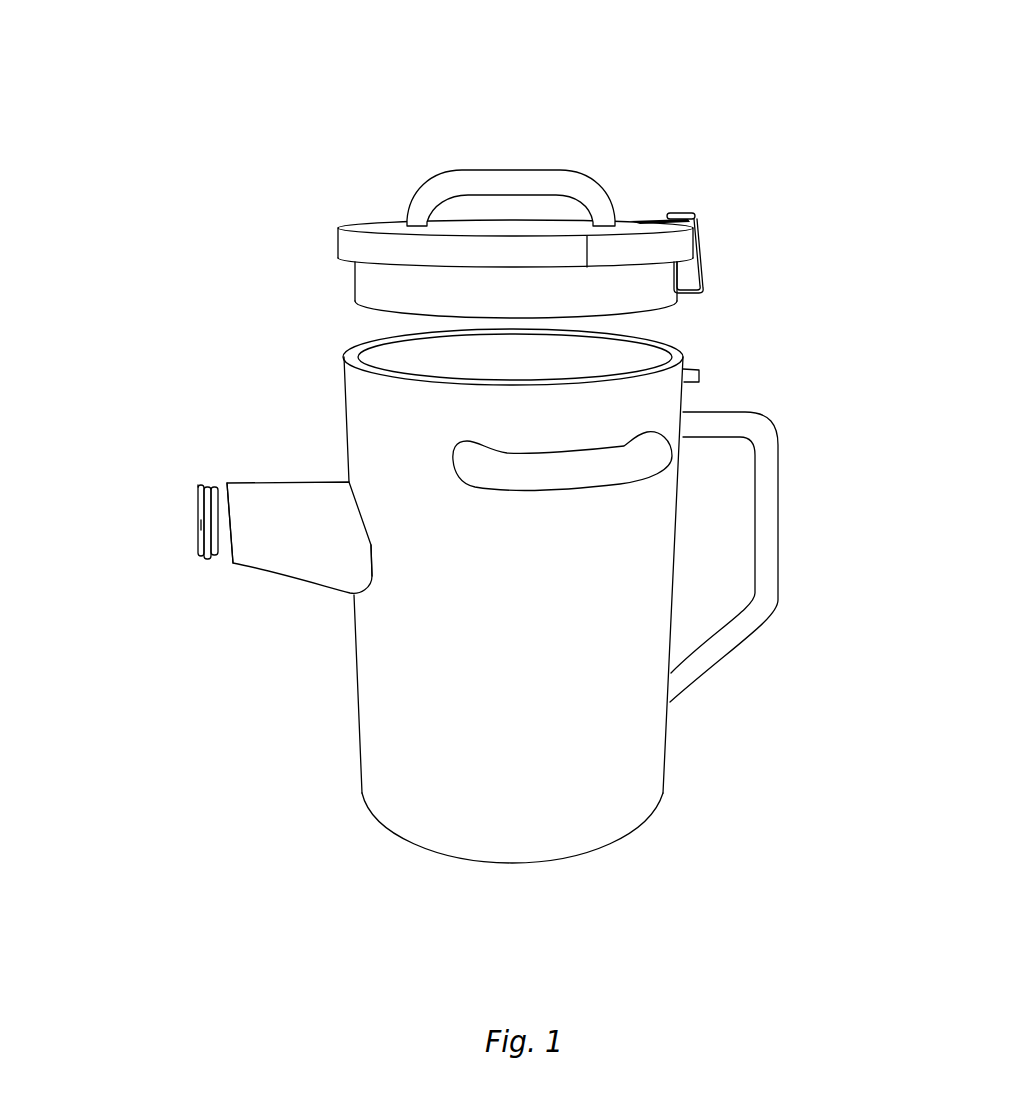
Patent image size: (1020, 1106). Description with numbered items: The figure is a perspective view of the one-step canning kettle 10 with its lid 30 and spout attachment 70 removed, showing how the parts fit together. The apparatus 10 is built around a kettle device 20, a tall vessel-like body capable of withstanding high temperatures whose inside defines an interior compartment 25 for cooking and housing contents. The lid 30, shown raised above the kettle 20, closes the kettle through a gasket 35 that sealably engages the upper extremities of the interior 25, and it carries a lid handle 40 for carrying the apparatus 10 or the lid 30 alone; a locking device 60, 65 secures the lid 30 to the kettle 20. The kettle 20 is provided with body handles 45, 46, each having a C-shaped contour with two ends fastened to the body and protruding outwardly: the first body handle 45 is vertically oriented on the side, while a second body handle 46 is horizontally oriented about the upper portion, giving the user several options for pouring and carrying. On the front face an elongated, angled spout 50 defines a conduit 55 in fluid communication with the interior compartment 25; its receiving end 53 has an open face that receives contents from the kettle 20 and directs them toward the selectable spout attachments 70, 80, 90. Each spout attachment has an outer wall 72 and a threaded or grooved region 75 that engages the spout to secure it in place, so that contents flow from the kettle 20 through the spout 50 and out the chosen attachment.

The one-step canning kettle 10 is at (810, 137).
The kettle device 20 is at (677, 567).
The interior compartment 25 is at (368, 347).
The lid 30 is at (370, 221).
The gasket 35 is at (633, 288).
The lid handle 40 is at (440, 192).
The first body handle 45 is at (723, 637).
The second body handle 46 is at (502, 473).
The spout 50 is at (290, 503).
The receiving end 53 is at (371, 545).
The conduit 55 is at (227, 483).
The locking device 60 is at (690, 212).
The locking device 65 is at (700, 375).
The spout attachment 70 is at (197, 545).
The outer wall 72 is at (212, 559).
The threaded or grooved region 75 is at (198, 485).
The spout attachment 80 is at (197, 528).
The spout attachment 90 is at (199, 505).